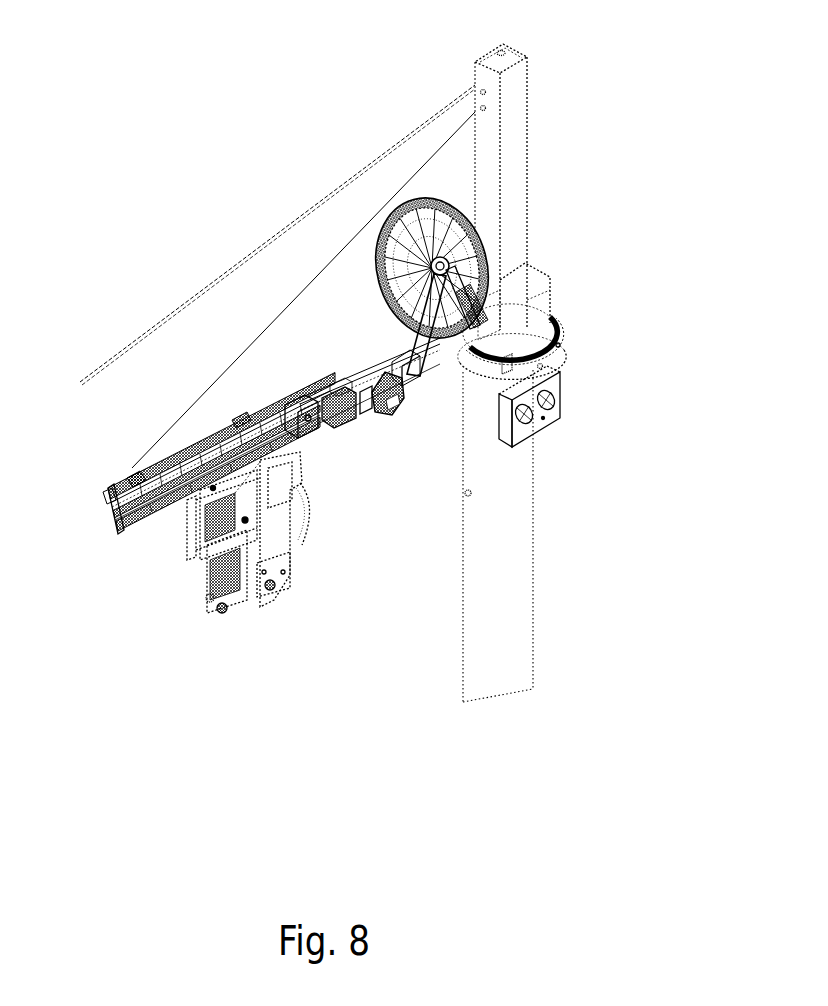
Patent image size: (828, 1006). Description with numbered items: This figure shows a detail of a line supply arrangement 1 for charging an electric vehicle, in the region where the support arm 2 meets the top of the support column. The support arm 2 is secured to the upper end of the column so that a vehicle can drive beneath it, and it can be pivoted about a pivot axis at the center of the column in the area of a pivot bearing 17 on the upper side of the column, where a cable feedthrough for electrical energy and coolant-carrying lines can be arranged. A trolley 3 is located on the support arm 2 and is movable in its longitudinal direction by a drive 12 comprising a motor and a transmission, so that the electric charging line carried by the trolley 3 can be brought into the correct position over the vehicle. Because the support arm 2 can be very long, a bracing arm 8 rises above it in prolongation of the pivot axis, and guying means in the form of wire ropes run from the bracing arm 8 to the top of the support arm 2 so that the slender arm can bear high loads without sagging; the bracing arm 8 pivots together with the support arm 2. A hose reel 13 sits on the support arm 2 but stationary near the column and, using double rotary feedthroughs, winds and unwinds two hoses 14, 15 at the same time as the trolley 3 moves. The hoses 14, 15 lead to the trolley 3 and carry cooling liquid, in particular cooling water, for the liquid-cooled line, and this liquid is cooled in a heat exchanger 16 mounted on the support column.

The line supply arrangement 1 is at (183, 208).
The support arm 2 is at (118, 533).
The trolley 3 is at (266, 606).
The bracing arm 8 is at (513, 122).
The drive 12 is at (397, 412).
The hose reel 13 is at (480, 233).
The hose 14 is at (331, 388).
The hose 15 is at (304, 434).
The heat exchanger 16 is at (550, 415).
The pivot bearing 17 is at (552, 325).